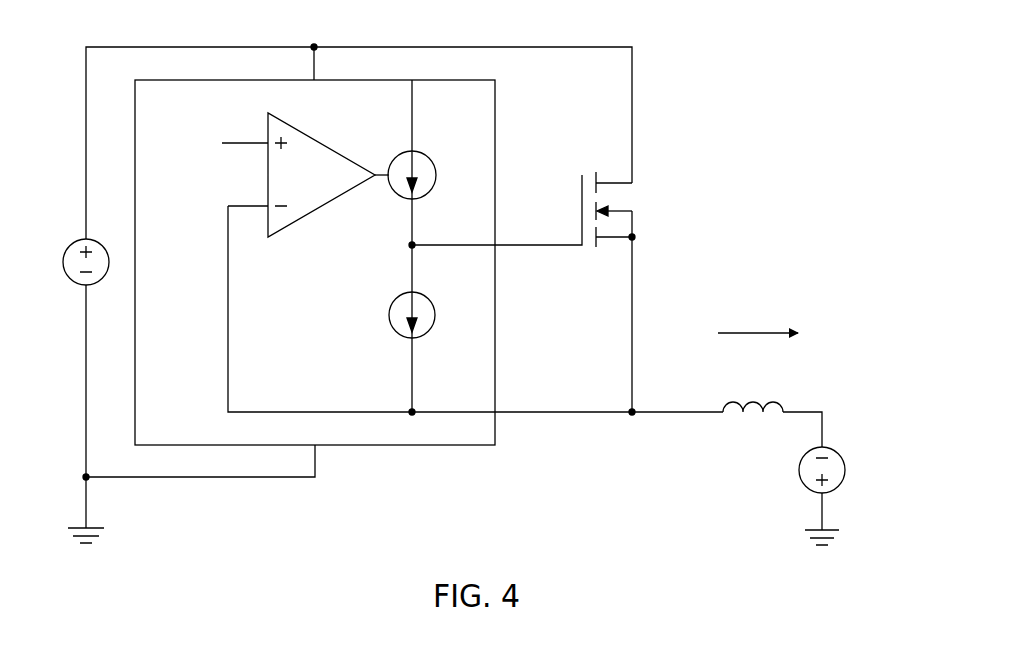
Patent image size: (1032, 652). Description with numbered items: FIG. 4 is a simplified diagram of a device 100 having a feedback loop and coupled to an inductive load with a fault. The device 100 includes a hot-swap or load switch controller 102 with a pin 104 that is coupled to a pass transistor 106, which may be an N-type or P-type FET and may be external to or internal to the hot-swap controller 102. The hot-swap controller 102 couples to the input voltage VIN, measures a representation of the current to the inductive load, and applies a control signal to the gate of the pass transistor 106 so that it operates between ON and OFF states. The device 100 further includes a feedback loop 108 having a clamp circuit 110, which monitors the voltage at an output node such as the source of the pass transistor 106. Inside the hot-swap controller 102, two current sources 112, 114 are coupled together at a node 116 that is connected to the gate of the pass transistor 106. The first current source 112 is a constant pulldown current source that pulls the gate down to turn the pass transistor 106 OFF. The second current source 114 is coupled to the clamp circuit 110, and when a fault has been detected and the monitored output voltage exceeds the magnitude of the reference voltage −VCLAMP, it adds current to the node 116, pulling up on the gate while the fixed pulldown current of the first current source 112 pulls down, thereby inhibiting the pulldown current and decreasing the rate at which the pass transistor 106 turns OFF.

The device 100 is at (750, 53).
The hot-swap controller 102 is at (495, 115).
The pin 104 is at (497, 249).
The pass transistor 106 is at (612, 182).
The feedback loop 108 is at (313, 413).
The clamp circuit 110 is at (322, 209).
The first current source 112 is at (430, 296).
The second current source 114 is at (429, 158).
The node 116 is at (416, 242).